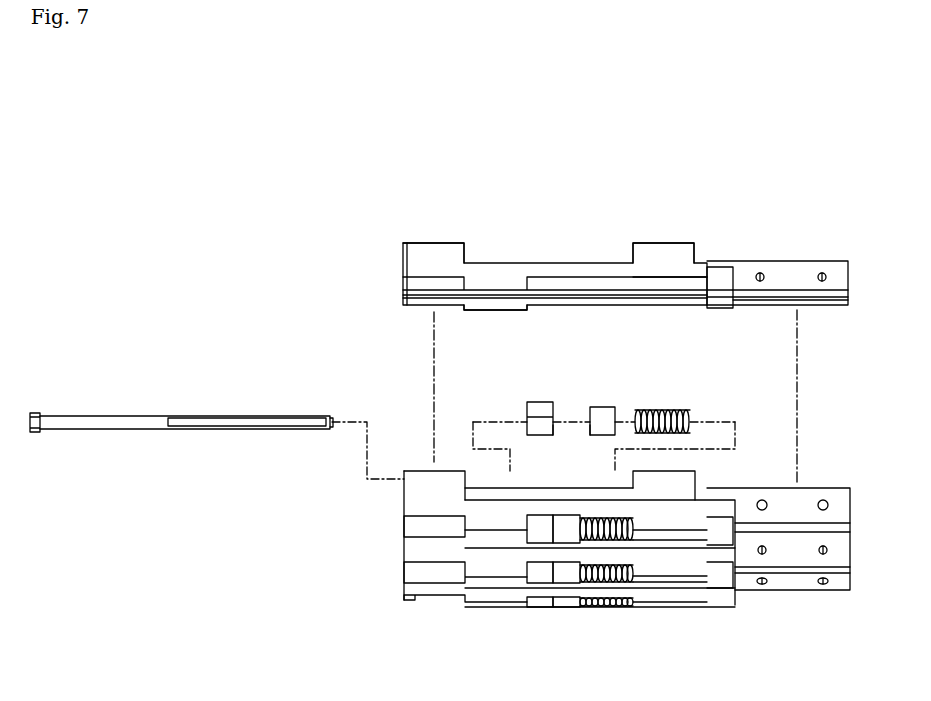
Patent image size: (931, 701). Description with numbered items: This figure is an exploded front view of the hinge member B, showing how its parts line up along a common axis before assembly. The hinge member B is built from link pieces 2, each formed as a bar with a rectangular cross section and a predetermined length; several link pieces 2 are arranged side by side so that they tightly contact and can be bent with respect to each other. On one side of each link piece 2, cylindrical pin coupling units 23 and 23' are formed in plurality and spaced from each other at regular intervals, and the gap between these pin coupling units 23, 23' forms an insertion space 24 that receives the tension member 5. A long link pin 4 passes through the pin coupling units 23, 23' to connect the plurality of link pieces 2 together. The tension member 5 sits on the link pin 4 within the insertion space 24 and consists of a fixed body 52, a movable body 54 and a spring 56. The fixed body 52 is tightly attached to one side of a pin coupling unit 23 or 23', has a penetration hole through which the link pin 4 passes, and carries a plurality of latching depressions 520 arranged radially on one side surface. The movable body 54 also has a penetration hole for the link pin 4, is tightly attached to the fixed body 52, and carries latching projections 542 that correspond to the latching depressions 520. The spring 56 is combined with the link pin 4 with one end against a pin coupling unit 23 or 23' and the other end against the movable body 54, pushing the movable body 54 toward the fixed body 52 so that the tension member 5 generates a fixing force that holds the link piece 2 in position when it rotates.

The link piece 2 is at (808, 258).
The link pin 4 is at (153, 416).
The tension member 5 is at (647, 360).
The pin coupling unit 23 is at (451, 356).
The pin coupling unit 23' is at (705, 382).
The insertion space 24 is at (545, 256).
The fixed body 52 is at (541, 402).
The movable body 54 is at (600, 407).
The spring 56 is at (645, 410).
The latching depressions 520 is at (553, 436).
The latching projections 542 is at (590, 436).
The hinge member B is at (741, 131).